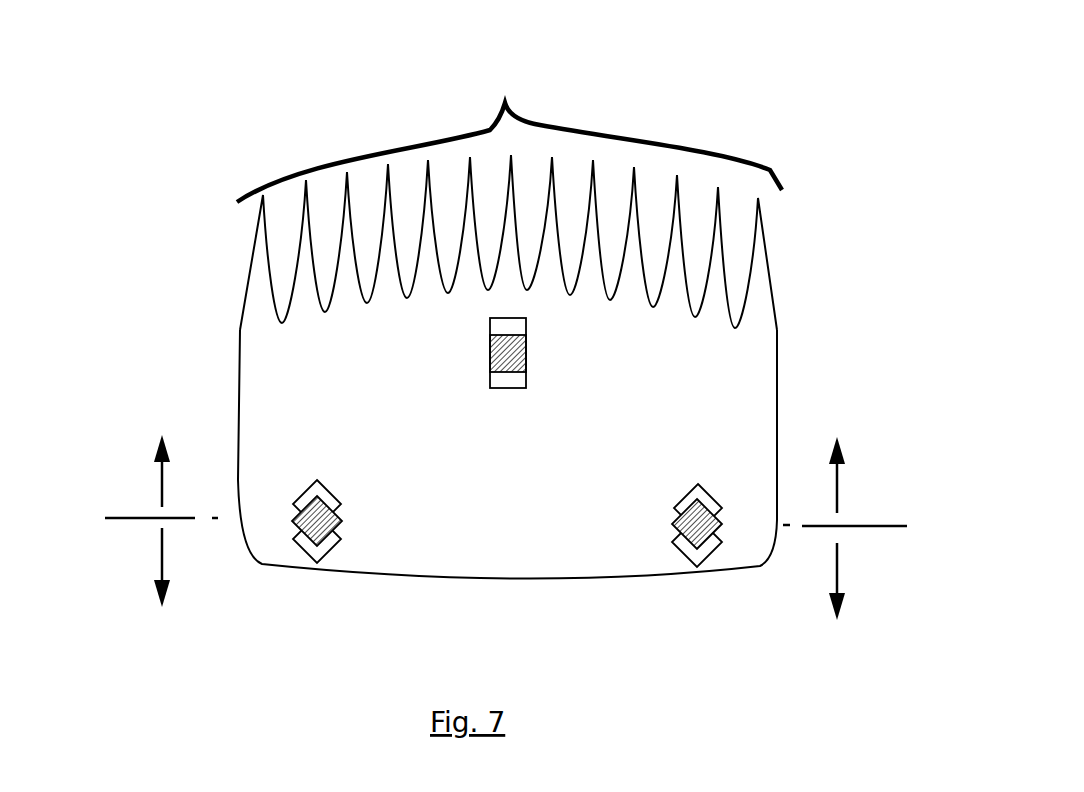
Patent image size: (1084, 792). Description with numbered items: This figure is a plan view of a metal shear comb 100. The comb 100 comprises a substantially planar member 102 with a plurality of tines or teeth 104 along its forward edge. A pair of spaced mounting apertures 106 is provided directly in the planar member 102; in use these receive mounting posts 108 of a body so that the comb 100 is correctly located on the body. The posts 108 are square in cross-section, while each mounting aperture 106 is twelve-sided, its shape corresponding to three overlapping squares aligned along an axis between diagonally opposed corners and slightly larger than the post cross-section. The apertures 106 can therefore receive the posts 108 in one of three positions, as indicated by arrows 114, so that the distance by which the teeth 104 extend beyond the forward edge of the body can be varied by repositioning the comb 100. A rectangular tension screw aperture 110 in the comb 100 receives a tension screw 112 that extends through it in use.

The shear comb 100 is at (812, 70).
The planar member 102 is at (753, 382).
The teeth 104 is at (505, 97).
The mounting apertures 106 is at (327, 487).
The mounting posts 108 is at (340, 518).
The tension screw aperture 110 is at (507, 388).
The tension screw 112 is at (517, 353).
The arrows 114 is at (158, 480).